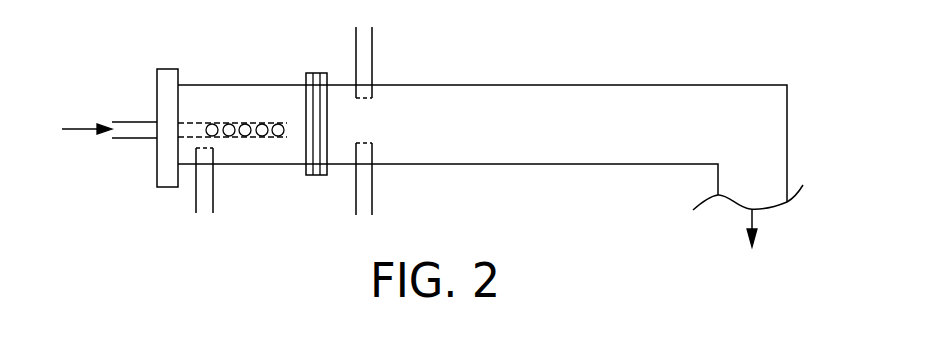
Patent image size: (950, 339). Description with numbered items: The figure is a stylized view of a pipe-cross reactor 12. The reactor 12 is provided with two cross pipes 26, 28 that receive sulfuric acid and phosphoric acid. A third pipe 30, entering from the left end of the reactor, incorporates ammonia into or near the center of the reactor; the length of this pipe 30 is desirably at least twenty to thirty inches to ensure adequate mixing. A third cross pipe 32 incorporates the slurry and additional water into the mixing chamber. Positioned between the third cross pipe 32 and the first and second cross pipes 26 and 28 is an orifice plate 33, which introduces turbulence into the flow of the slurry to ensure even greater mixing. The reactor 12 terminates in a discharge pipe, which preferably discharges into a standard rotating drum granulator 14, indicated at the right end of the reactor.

The pipe-cross reactor 12 is at (523, 85).
The rotating drum granulator 14 is at (748, 218).
The cross pipe 26 is at (372, 58).
The cross pipe 28 is at (372, 197).
The third pipe 30 is at (73, 127).
The third cross pipe 32 is at (197, 193).
The orifice plate 33 is at (315, 177).